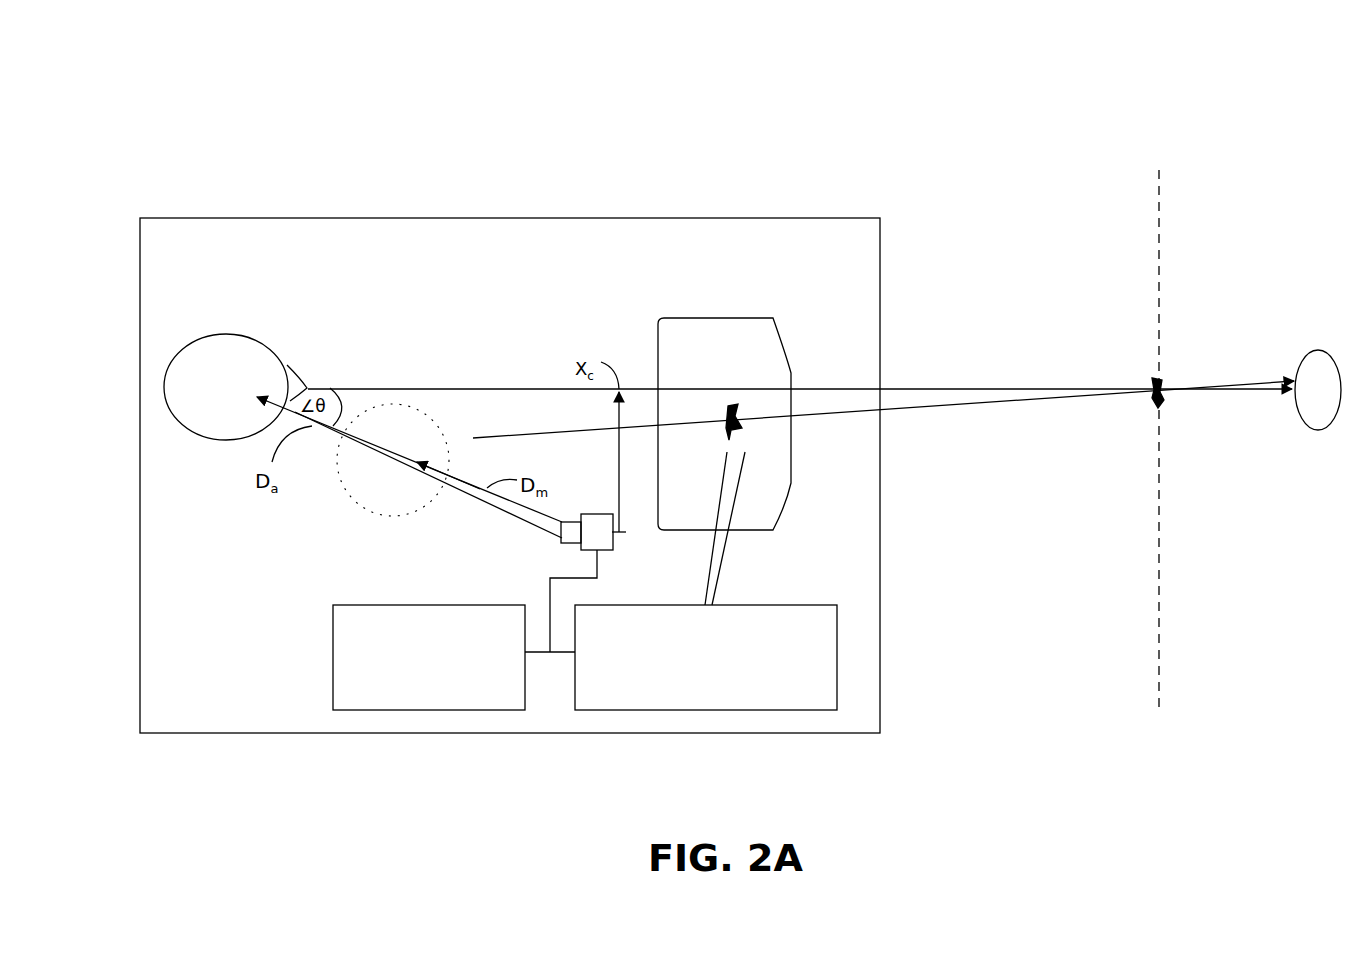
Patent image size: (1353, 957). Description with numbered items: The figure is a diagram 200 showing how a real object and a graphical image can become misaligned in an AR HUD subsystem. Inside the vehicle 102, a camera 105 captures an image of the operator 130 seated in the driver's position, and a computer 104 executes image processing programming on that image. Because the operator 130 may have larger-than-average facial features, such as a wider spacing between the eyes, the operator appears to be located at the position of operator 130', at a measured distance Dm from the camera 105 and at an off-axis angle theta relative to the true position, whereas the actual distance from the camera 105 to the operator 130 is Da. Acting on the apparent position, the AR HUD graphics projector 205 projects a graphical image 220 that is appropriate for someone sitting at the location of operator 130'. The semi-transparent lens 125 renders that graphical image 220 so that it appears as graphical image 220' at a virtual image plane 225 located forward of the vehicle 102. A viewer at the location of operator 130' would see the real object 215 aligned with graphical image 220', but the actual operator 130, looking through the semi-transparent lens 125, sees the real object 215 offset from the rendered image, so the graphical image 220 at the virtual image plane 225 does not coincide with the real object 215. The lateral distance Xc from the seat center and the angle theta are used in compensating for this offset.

The diagram 200 is at (162, 98).
The vehicle 102 is at (315, 259).
The operator 130 is at (235, 387).
The operator apparent location 130' is at (393, 460).
The camera 105 is at (562, 540).
The computer 104 is at (451, 681).
The AR HUD graphics projector 205 is at (807, 697).
The semi-transparent lens 125 is at (699, 330).
The graphical image 220 is at (707, 445).
The rendered graphical image 220' is at (1126, 413).
The virtual image plane 225 is at (1158, 272).
The real object 215 is at (1316, 350).